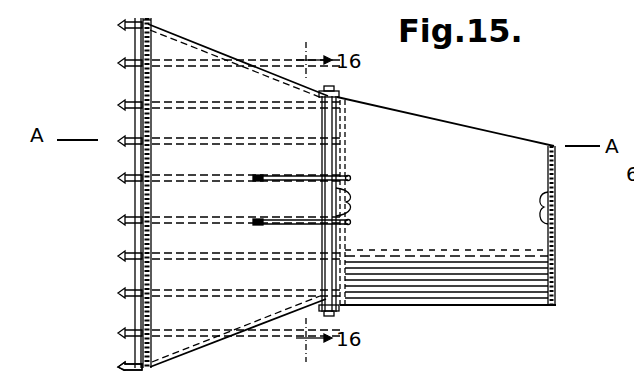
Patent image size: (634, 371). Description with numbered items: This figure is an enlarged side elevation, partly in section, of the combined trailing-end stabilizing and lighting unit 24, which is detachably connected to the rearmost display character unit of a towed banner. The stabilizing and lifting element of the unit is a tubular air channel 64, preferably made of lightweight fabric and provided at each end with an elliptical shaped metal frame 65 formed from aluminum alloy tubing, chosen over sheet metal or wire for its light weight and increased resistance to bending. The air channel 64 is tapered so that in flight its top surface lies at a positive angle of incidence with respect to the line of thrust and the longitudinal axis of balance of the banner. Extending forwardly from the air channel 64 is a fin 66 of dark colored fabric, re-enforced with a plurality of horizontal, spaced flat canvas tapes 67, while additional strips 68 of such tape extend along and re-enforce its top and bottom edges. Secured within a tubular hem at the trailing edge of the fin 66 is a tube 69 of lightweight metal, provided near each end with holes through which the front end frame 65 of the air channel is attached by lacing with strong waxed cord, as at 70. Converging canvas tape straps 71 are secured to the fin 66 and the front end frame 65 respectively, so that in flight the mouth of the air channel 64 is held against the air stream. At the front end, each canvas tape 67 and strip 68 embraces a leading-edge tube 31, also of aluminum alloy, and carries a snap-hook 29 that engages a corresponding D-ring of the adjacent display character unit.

The combined trailing-end stabilizing and lighting unit 24 is at (445, 117).
The snap-hook 29 is at (122, 333).
The leading-edge tube 31 is at (150, 24).
The tubular air channel 64 is at (448, 225).
The elliptical shaped metal frame 65 is at (350, 192).
The fin 66 is at (219, 205).
The flat canvas tapes 67 is at (200, 103).
The strips of tape 68 is at (215, 56).
The tube 69 is at (311, 204).
The lacing 70 is at (334, 95).
The converging canvas tape straps 71 is at (284, 184).